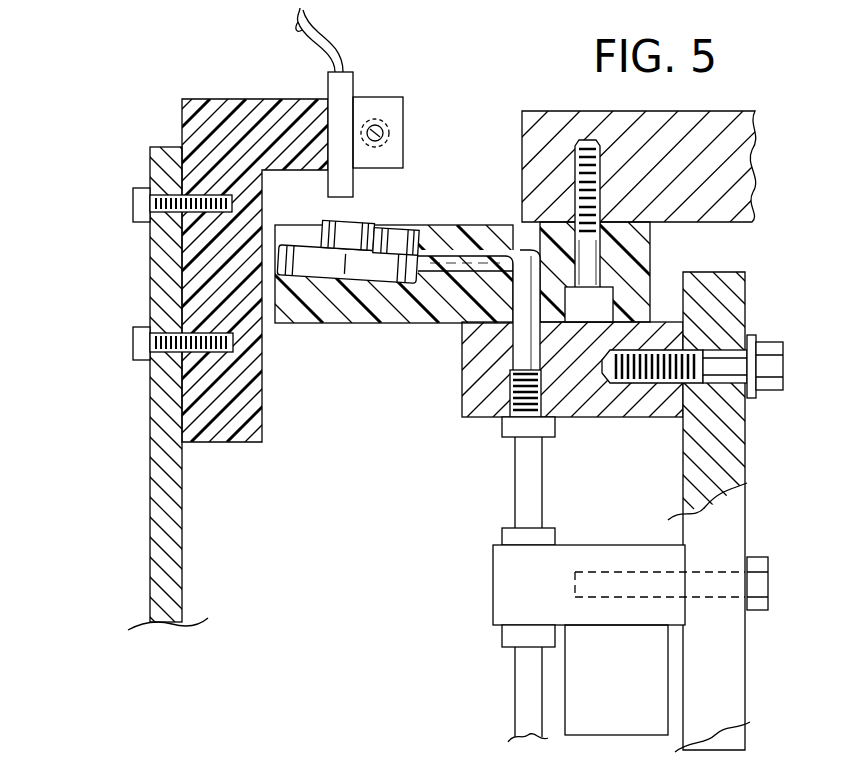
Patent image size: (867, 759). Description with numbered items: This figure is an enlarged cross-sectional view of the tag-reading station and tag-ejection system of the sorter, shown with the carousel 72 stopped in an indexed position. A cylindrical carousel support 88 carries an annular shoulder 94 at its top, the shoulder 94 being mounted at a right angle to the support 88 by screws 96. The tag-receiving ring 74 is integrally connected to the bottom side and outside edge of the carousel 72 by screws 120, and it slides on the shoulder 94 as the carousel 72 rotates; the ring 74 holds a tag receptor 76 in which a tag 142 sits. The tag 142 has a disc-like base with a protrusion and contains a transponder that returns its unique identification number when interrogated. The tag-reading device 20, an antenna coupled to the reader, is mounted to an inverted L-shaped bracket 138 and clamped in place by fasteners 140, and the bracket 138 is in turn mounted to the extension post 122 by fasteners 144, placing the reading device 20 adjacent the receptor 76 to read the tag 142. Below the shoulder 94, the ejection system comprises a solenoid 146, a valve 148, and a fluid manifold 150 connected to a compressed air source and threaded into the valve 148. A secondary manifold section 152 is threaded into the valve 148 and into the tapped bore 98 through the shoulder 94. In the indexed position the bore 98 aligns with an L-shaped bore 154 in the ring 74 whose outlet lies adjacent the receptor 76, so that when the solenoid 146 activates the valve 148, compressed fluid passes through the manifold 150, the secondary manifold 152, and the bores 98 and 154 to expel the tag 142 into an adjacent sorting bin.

The tag-reading device 20 is at (350, 84).
The carousel 72 is at (538, 118).
The tag-receiving ring 74 is at (302, 323).
The tag receptor 76 is at (390, 228).
The carousel support 88 is at (740, 452).
The annular shoulder 94 is at (470, 418).
The screws 96 is at (775, 348).
The bore 98 is at (522, 345).
The screws 120 is at (590, 260).
The extension post 122 is at (150, 566).
The inverted L-shaped bracket 138 is at (258, 106).
The fasteners 140 is at (385, 127).
The tag 142 is at (346, 262).
The fasteners 144 is at (138, 197).
The solenoid 146 is at (580, 706).
The valve 148 is at (513, 580).
The fluid manifold 150 is at (522, 676).
The secondary manifold section 152 is at (520, 462).
The L-shaped bore 154 is at (505, 222).